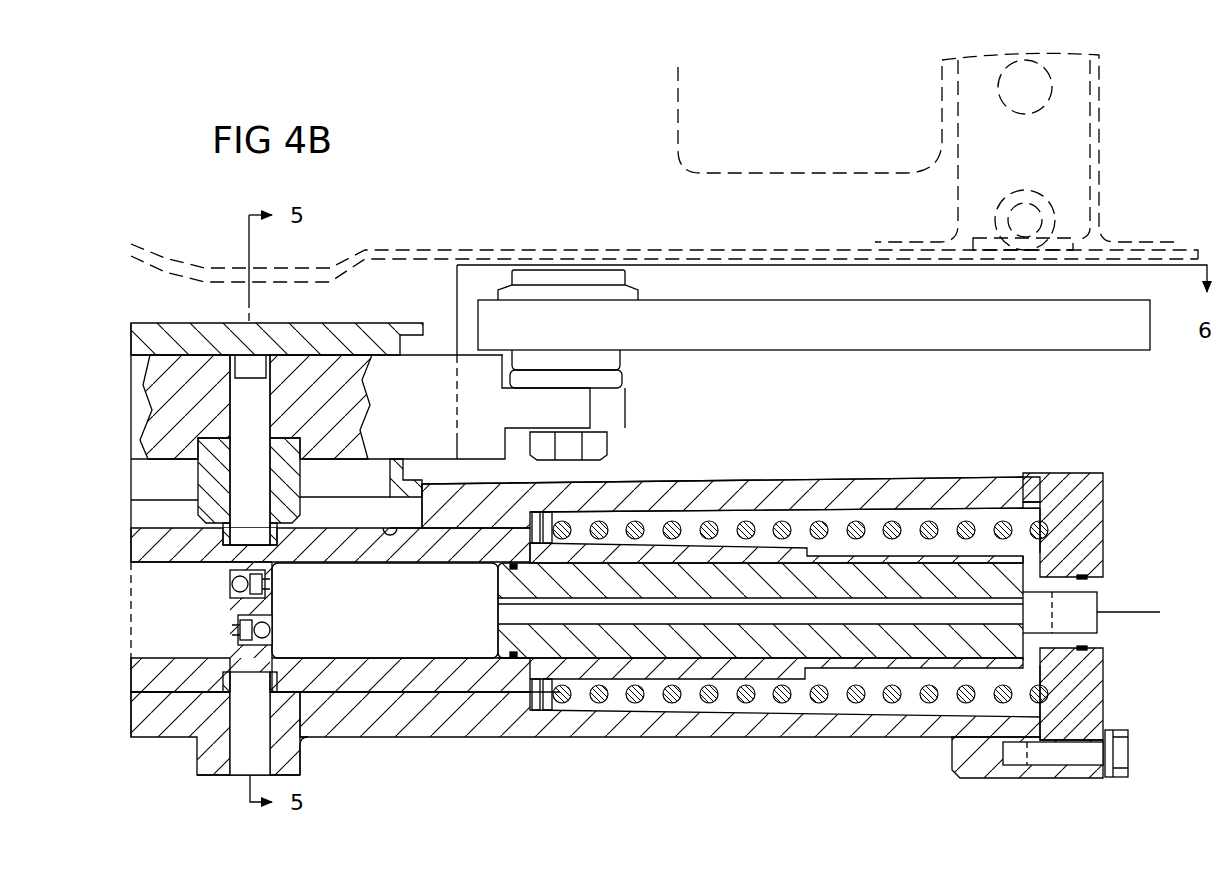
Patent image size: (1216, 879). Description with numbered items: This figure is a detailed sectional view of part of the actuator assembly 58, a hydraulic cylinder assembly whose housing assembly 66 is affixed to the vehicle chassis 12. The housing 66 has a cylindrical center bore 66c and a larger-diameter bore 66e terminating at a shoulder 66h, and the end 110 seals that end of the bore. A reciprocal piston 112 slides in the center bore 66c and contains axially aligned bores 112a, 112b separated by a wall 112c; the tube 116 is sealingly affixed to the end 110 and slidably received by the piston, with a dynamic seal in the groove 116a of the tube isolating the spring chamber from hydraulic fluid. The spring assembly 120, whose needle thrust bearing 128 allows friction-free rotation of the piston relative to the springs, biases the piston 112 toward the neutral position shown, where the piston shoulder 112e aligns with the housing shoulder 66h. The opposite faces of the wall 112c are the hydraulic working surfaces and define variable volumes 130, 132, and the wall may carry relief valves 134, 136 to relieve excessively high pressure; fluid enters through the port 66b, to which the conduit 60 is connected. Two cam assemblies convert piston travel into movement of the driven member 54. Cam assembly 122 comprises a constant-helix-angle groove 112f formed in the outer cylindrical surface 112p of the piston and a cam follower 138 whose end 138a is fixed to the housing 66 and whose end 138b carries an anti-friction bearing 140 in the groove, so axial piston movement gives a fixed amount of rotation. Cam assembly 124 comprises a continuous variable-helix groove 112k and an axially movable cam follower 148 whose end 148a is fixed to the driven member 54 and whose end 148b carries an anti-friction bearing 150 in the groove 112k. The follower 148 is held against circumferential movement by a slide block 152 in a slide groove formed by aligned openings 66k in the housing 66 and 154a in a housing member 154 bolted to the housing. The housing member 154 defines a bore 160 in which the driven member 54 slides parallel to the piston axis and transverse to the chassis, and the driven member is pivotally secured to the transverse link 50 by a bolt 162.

The chassis 12 is at (705, 243).
The transverse link 50 is at (1015, 348).
The driven member 54 is at (398, 418).
The actuator assembly 58 is at (842, 460).
The conduit 60 is at (1142, 613).
The housing assembly 66 is at (932, 488).
The port 66b is at (1107, 622).
The cylindrical center bore 66c is at (392, 528).
The bore 66e is at (793, 515).
The shoulder 66h is at (590, 486).
The opening 66k is at (130, 524).
The end 110 is at (1100, 513).
The reciprocal piston 112 is at (727, 682).
The bore 112a is at (135, 562).
The bore 112b is at (395, 565).
The wall 112c is at (276, 592).
The piston shoulder 112e is at (513, 657).
The helical groove 112f is at (310, 754).
The continuous helical groove 112k is at (247, 537).
The outer surface 112p is at (435, 692).
The tube 116 is at (915, 568).
The groove 116a is at (513, 652).
The spring assembly 120 is at (835, 702).
The cam assembly 122 is at (306, 706).
The cam assembly 124 is at (160, 489).
The needle thrust bearing 128 is at (546, 720).
The variable volume 130 is at (158, 650).
The variable volume 132 is at (368, 613).
The relief valve 134 is at (232, 588).
The relief valve 136 is at (270, 630).
The cam follower 138 is at (198, 735).
The end 138a is at (238, 767).
The end 138b is at (272, 648).
The anti-friction bearing 140 is at (224, 700).
The cam follower 148 is at (290, 420).
The end 148a is at (258, 380).
The end 148b is at (230, 583).
The anti-friction bearing 150 is at (262, 520).
The slide block 152 is at (370, 462).
The housing member 154 is at (207, 327).
The opening 154a is at (137, 465).
The bore 160 is at (392, 356).
The bolt 162 is at (605, 450).